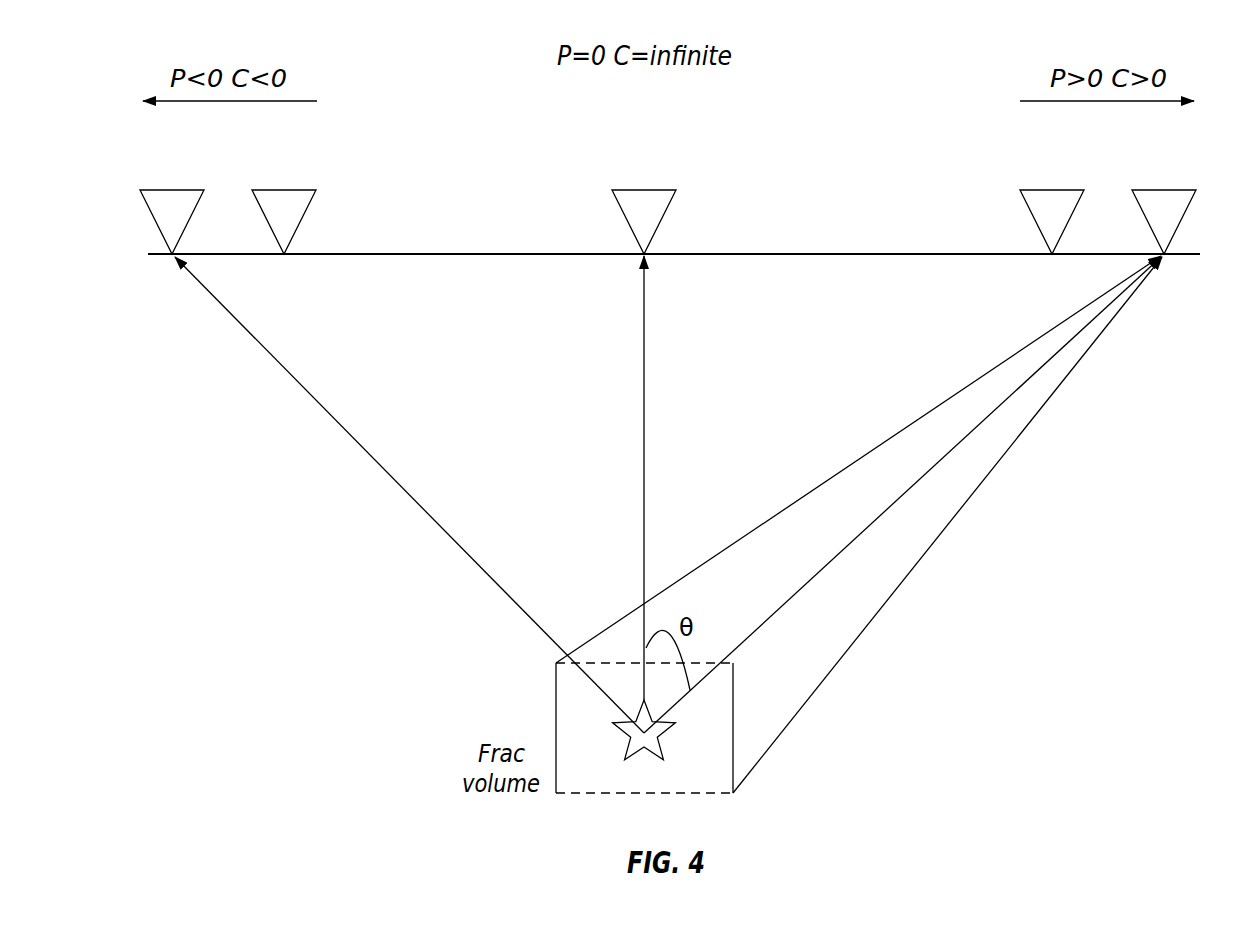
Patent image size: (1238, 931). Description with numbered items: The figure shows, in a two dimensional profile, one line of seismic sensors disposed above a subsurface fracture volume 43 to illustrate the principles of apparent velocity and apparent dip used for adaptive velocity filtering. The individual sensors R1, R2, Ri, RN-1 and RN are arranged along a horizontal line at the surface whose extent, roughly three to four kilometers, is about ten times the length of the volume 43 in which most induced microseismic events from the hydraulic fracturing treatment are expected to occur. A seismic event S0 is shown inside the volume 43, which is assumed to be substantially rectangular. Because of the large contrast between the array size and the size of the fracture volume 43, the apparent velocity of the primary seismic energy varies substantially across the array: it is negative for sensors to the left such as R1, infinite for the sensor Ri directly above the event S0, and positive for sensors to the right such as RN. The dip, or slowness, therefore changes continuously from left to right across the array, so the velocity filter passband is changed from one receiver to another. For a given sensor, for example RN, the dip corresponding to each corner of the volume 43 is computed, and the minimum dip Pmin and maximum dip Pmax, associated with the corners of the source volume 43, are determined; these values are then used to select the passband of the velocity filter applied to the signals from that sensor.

The fracture volume 43 is at (721, 728).
The seismic sensor R1 is at (172, 202).
The seismic sensor R2 is at (284, 202).
The seismic sensor Ri is at (644, 203).
The seismic sensor RN-1 is at (1052, 203).
The seismic sensor RN is at (1164, 203).
The maximum dip Pmax is at (858, 459).
The minimum dip Pmin is at (947, 525).
The seismic event S0 is at (663, 746).